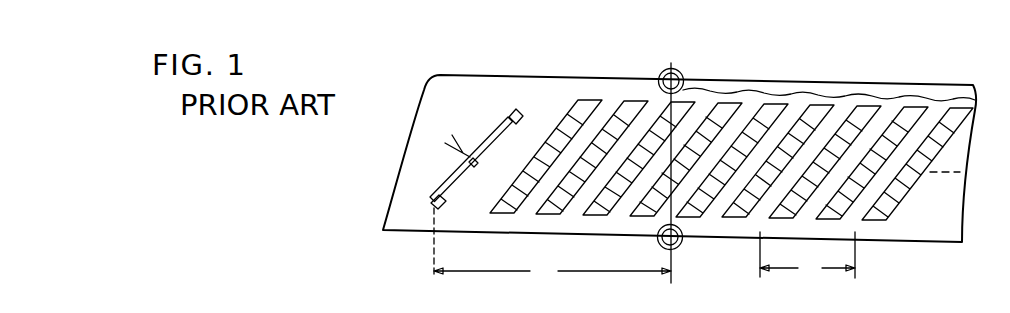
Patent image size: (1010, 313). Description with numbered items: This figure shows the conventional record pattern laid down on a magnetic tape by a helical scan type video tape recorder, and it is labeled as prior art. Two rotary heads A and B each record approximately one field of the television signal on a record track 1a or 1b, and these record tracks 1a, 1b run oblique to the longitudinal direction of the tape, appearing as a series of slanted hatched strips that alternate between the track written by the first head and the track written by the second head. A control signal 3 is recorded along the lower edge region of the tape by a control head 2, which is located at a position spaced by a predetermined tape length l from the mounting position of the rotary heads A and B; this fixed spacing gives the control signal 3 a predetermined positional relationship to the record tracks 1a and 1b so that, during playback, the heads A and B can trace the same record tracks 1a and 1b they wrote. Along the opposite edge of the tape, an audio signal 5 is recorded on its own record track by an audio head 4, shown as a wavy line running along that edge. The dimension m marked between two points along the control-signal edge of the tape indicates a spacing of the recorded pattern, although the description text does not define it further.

The record track 1a is at (586, 103).
The record track 1b is at (636, 103).
The control head 2 is at (680, 246).
The control signal 3 is at (759, 234).
The audio head 4 is at (682, 75).
The audio signal 5 is at (767, 89).
The rotary head A is at (441, 205).
The rotary head B is at (520, 110).
The predetermined tape length l is at (552, 246).
The pitch dimension m is at (807, 256).